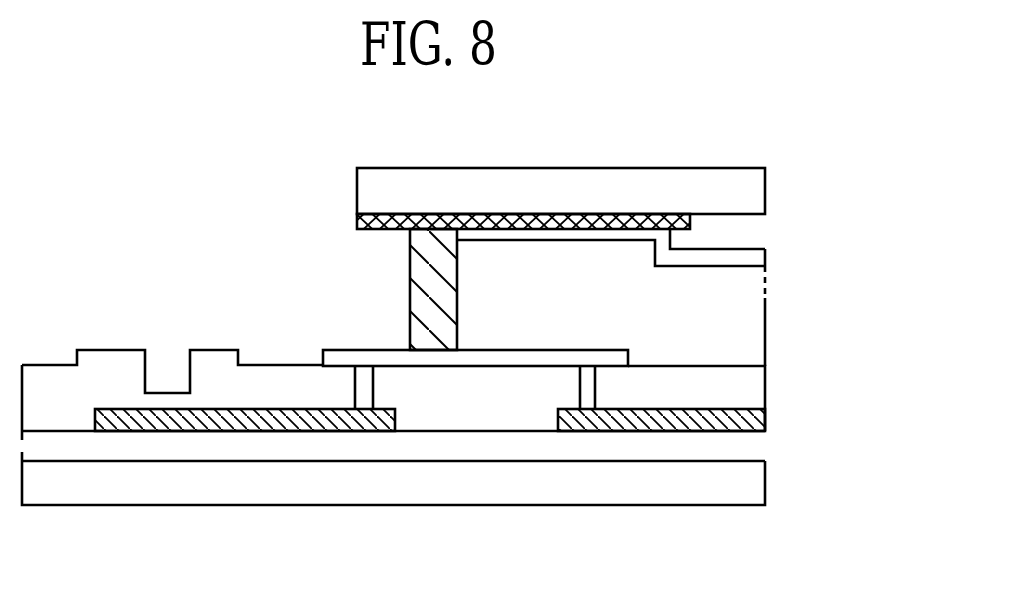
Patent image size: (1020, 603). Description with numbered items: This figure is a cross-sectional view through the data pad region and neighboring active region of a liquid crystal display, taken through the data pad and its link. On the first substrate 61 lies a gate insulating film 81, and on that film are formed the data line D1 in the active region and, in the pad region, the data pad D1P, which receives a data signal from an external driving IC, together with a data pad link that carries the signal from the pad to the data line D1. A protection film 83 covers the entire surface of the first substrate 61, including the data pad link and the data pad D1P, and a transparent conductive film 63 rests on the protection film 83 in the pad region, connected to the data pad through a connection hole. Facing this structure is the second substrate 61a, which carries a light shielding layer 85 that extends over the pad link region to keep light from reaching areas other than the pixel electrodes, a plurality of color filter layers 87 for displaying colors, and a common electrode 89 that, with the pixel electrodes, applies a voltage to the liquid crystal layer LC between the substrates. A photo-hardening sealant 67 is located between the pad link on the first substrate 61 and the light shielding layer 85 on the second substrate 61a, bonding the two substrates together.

The second substrate 61a is at (765, 185).
The light shielding layer 85 is at (356, 219).
The photo-hardening sealant 67 is at (409, 290).
The color filter layers 87 is at (770, 230).
The common electrode 89 is at (765, 266).
The liquid crystal layer LC is at (765, 318).
The transparent conductive film 63 is at (125, 350).
The protection film 83 is at (765, 388).
The data pad D1P is at (218, 410).
The data line D1 is at (688, 428).
The gate insulating film 81 is at (770, 448).
The first substrate 61 is at (765, 487).